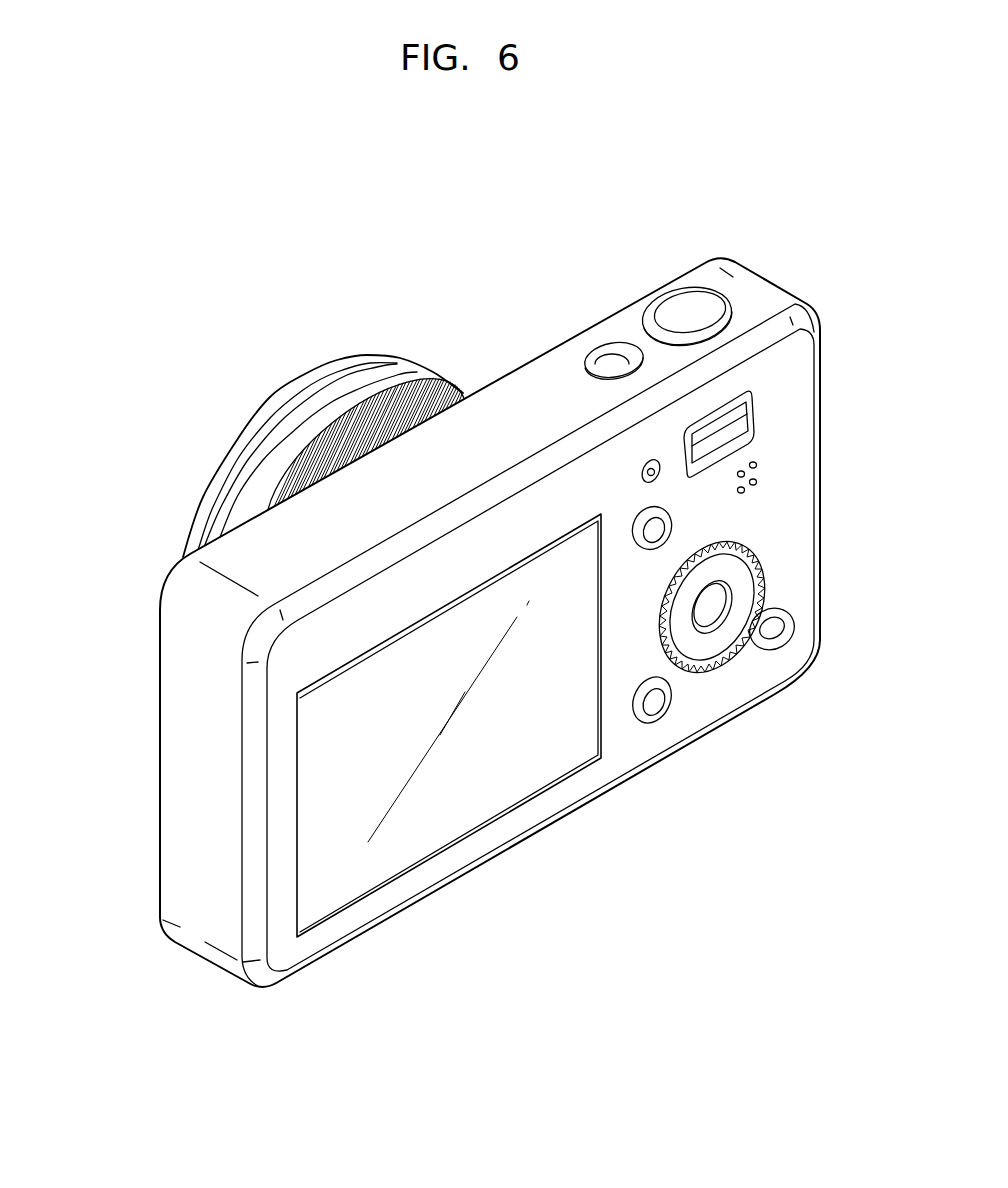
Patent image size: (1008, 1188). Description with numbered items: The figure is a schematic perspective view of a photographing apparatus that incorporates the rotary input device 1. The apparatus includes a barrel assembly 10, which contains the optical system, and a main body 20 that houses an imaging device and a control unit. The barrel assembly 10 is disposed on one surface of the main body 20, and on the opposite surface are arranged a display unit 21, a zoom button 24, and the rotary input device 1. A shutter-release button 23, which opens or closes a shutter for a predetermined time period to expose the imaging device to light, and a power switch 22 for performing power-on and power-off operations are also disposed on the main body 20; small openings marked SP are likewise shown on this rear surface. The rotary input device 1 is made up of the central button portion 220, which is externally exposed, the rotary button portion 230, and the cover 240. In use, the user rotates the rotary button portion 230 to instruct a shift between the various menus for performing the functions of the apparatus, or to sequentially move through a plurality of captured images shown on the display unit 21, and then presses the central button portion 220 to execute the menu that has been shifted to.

The rotary input device 1 is at (756, 658).
The barrel assembly 10 is at (440, 368).
The main body 20 is at (150, 873).
The display unit 21 is at (479, 800).
The power switch 22 is at (612, 348).
The shutter-release button 23 is at (685, 302).
The zoom button 24 is at (742, 410).
The speaker SP is at (760, 480).
The central button portion 220 is at (712, 630).
The rotary button portion 230 is at (695, 682).
The cover 240 is at (724, 634).